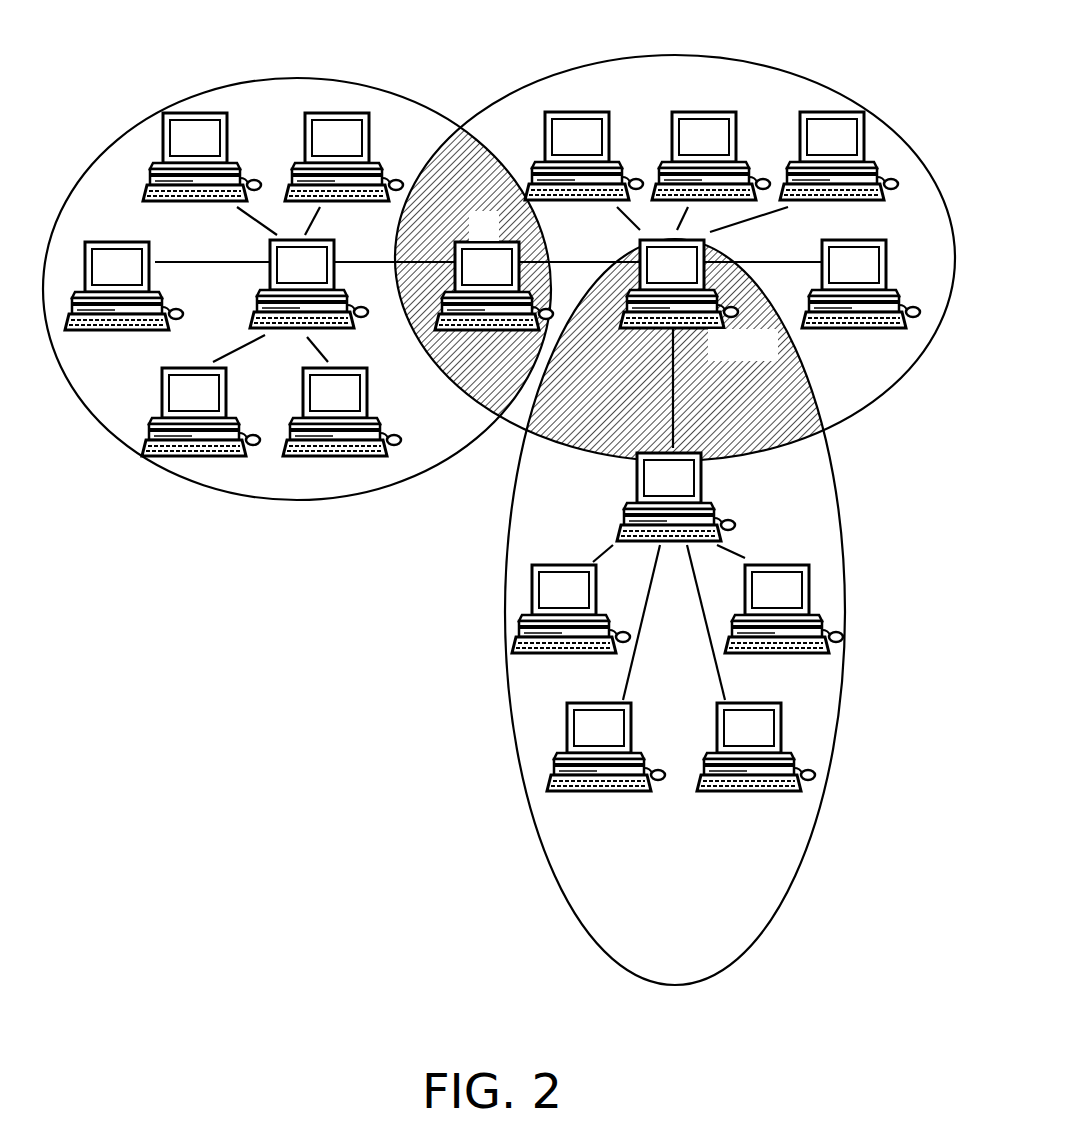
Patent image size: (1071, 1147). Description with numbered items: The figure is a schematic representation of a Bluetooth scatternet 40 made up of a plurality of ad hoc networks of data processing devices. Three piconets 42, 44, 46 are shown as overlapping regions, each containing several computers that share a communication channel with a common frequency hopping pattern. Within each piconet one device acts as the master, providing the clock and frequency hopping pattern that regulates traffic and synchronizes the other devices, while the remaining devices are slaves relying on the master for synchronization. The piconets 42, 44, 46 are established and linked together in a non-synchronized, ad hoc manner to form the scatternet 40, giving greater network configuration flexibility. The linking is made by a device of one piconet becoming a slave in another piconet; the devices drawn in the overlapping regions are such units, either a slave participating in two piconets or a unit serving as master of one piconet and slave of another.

The scatternet 40 is at (338, 654).
The piconet 42 is at (291, 79).
The piconet 44 is at (673, 56).
The piconet 46 is at (845, 588).